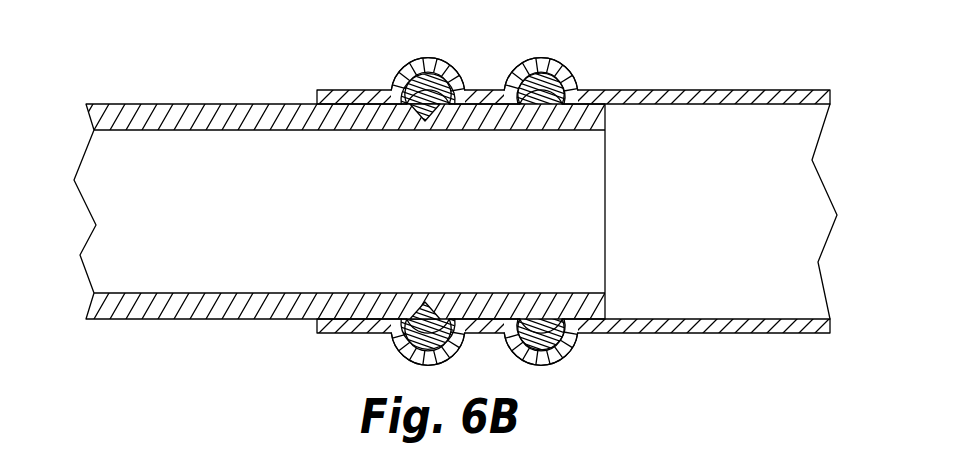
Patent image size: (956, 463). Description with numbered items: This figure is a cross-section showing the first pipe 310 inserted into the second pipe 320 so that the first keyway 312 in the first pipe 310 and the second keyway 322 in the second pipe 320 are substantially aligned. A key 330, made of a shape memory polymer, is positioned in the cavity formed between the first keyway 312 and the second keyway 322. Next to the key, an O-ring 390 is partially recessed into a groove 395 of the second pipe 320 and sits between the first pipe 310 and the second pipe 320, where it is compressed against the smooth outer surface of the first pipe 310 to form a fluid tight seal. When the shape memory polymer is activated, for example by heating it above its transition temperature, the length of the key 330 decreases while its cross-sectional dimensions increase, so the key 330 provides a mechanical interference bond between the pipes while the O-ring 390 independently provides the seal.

The first pipe 310 is at (150, 95).
The first keyway 312 is at (421, 124).
The second pipe 320 is at (771, 81).
The second keyway 322 is at (452, 68).
The key 330 is at (420, 82).
The O-ring 390 is at (546, 70).
The groove 395 is at (566, 80).